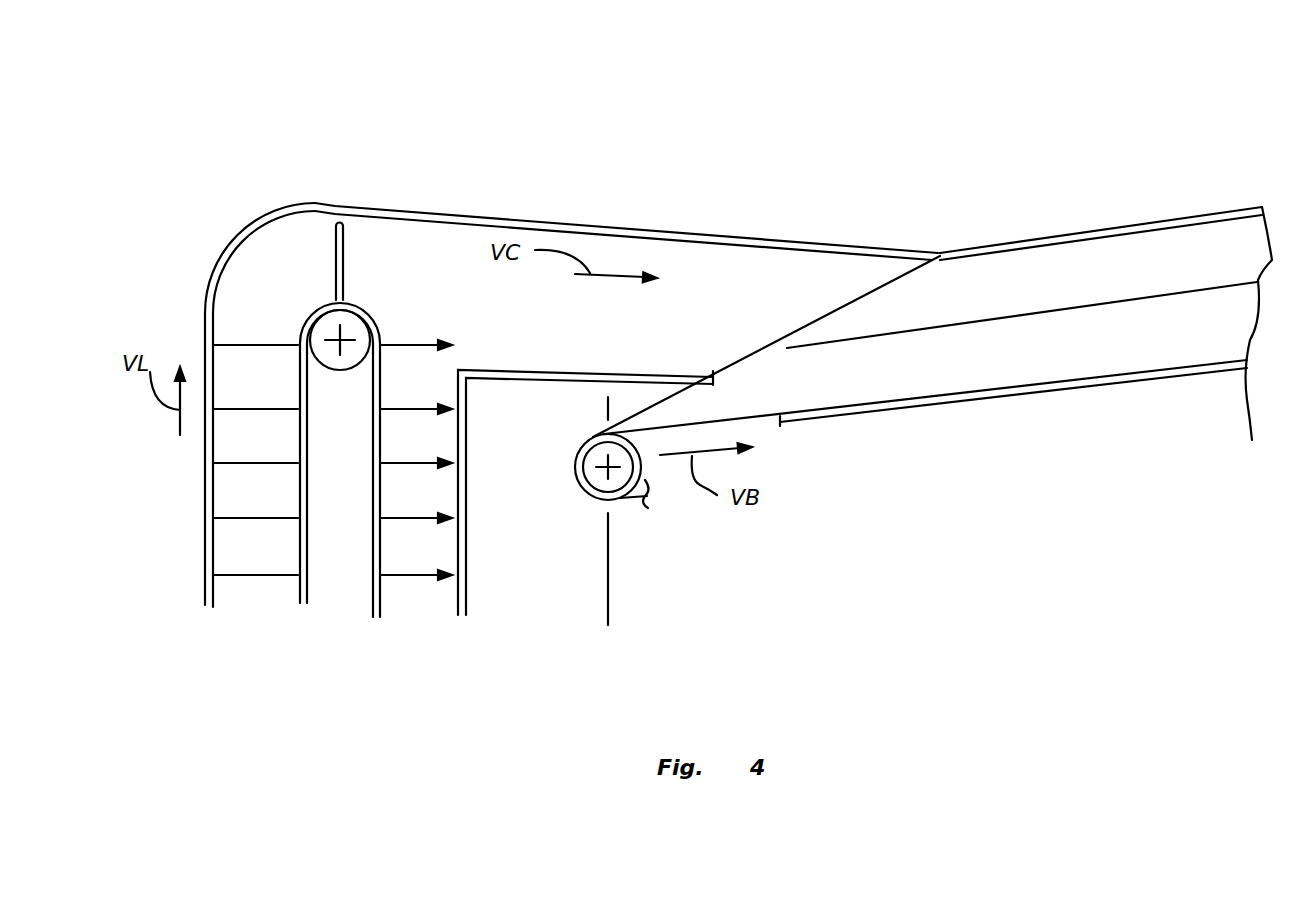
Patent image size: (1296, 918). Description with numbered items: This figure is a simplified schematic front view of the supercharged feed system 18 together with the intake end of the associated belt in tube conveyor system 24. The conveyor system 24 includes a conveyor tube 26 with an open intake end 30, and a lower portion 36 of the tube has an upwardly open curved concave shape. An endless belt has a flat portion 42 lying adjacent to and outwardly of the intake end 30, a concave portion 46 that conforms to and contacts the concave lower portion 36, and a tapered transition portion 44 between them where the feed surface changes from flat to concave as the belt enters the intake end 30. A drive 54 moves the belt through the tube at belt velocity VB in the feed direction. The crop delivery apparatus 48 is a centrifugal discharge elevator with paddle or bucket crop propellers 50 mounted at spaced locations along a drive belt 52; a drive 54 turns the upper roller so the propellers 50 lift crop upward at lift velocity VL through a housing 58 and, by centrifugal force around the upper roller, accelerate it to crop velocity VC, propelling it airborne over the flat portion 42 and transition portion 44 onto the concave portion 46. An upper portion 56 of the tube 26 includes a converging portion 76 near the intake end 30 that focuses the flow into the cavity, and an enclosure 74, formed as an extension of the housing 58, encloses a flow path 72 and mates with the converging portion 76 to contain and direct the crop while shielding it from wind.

The supercharged feed system 18 is at (772, 192).
The belt in tube conveyor system 24 is at (1102, 170).
The conveyor tube 26 is at (1148, 217).
The intake end 30 is at (708, 335).
The lower portion of conveyor tube 36 is at (1000, 403).
The flat portion of belt 42 is at (655, 403).
The tapered transition portion of belt 44 is at (826, 325).
The concave portion of belt 46 is at (1100, 295).
The crop delivery apparatus 48 is at (205, 270).
The crop propellers 50 is at (342, 258).
The drive belt 52 is at (307, 558).
The drive 54 is at (340, 370).
The upper portion of conveyor tube 56 is at (1013, 240).
The housing 58 is at (200, 568).
The flow path 72 is at (691, 282).
The enclosure 74 is at (843, 245).
The converging portion 76 is at (928, 235).